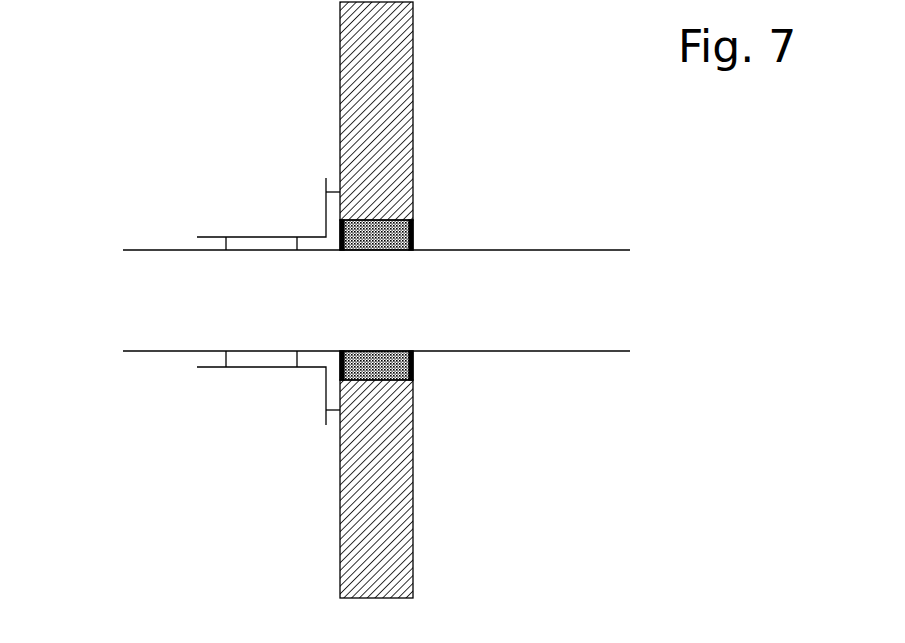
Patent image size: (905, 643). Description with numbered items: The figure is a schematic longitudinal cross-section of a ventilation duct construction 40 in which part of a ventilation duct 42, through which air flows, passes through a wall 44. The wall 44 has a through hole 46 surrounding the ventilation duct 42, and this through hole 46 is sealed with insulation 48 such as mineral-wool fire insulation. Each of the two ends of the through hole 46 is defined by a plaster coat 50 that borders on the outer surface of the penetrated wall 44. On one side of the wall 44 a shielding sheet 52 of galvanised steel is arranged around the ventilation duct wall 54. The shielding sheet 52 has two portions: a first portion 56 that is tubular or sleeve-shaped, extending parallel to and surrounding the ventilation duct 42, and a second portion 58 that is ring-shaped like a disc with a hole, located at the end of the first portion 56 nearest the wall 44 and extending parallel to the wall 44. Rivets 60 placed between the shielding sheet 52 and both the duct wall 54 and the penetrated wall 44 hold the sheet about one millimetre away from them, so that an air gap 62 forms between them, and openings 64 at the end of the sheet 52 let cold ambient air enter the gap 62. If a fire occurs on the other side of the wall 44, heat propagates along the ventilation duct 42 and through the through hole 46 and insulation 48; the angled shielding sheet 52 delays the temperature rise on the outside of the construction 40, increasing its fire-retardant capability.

The ventilation duct construction 40 is at (86, 69).
The ventilation duct 42 is at (600, 308).
The wall 44 is at (413, 58).
The through hole 46 is at (413, 250).
The insulation 48 is at (378, 357).
The plaster coat 50 is at (413, 367).
The shielding sheet 52 is at (323, 233).
The ventilation duct wall 54 is at (137, 250).
The first portion 56 is at (252, 237).
The second portion 58 is at (325, 190).
The rivets 60 is at (330, 410).
The air gap 62 is at (253, 367).
The openings 64 is at (197, 358).